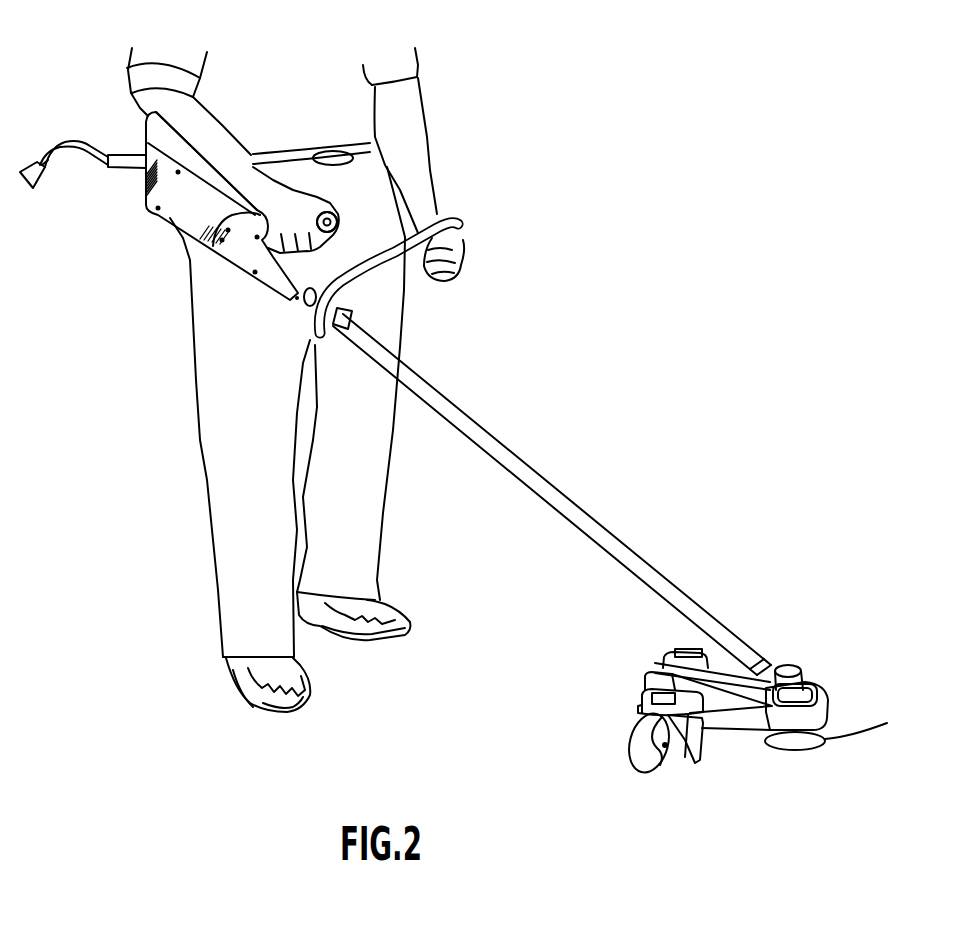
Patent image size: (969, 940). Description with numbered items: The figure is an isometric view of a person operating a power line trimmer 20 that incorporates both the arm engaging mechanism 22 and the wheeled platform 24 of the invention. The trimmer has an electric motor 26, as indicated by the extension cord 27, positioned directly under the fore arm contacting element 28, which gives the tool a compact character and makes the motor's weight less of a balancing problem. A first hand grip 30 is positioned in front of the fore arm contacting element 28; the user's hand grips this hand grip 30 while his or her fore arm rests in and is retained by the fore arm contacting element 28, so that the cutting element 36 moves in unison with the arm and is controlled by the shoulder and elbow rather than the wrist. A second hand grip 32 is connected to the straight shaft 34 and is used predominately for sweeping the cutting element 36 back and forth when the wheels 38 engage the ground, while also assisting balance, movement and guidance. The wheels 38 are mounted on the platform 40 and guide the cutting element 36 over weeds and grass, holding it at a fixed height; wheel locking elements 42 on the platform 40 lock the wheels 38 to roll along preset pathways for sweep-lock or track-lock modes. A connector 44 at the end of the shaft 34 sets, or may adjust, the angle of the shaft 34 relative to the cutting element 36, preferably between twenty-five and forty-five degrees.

The power line trimmer 20 is at (587, 220).
The arm engaging mechanism 22 is at (125, 225).
The wheeled platform 24 is at (777, 630).
The electric motor 26 is at (172, 218).
The extension cord 27 is at (63, 152).
The fore arm contacting element 28 is at (148, 129).
The first hand grip 30 is at (373, 172).
The second hand grip 32 is at (462, 227).
The shaft 34 is at (488, 433).
The cutting element 36 is at (863, 720).
The wheels 38 is at (630, 740).
The platform 40 is at (655, 666).
The wheel locking elements 42 is at (685, 650).
The connector 44 is at (797, 668).